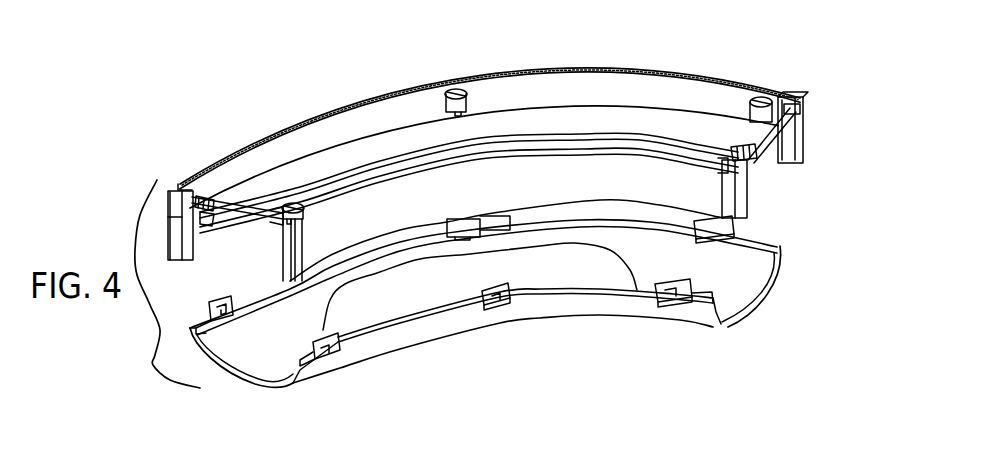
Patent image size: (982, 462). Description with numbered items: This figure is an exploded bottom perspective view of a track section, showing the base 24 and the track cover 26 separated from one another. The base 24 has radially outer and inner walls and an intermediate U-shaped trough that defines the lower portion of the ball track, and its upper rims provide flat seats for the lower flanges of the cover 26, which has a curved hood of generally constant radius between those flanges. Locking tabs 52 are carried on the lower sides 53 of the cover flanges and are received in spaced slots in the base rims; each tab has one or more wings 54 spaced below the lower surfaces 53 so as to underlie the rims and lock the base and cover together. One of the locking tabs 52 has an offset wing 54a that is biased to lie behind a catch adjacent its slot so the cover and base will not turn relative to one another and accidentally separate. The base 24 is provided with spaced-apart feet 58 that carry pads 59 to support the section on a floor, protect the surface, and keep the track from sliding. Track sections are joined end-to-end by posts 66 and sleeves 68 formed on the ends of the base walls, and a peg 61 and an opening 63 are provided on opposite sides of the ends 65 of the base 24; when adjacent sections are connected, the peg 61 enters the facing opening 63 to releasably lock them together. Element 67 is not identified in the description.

The base 24 is at (286, 116).
The cover 26 is at (741, 321).
The locking tabs 52 is at (226, 313).
The lower sides of the track cover flanges 53 is at (754, 244).
The wings 54 is at (206, 318).
The offset wing 54a is at (502, 224).
The feet 58 is at (311, 217).
The pads 59 is at (294, 203).
The peg 61 is at (178, 183).
The opening 63 is at (270, 238).
The ends of the base 65 is at (208, 231).
The posts 66 is at (172, 238).
The clip 67 is at (748, 177).
The sleeves 68 is at (288, 270).